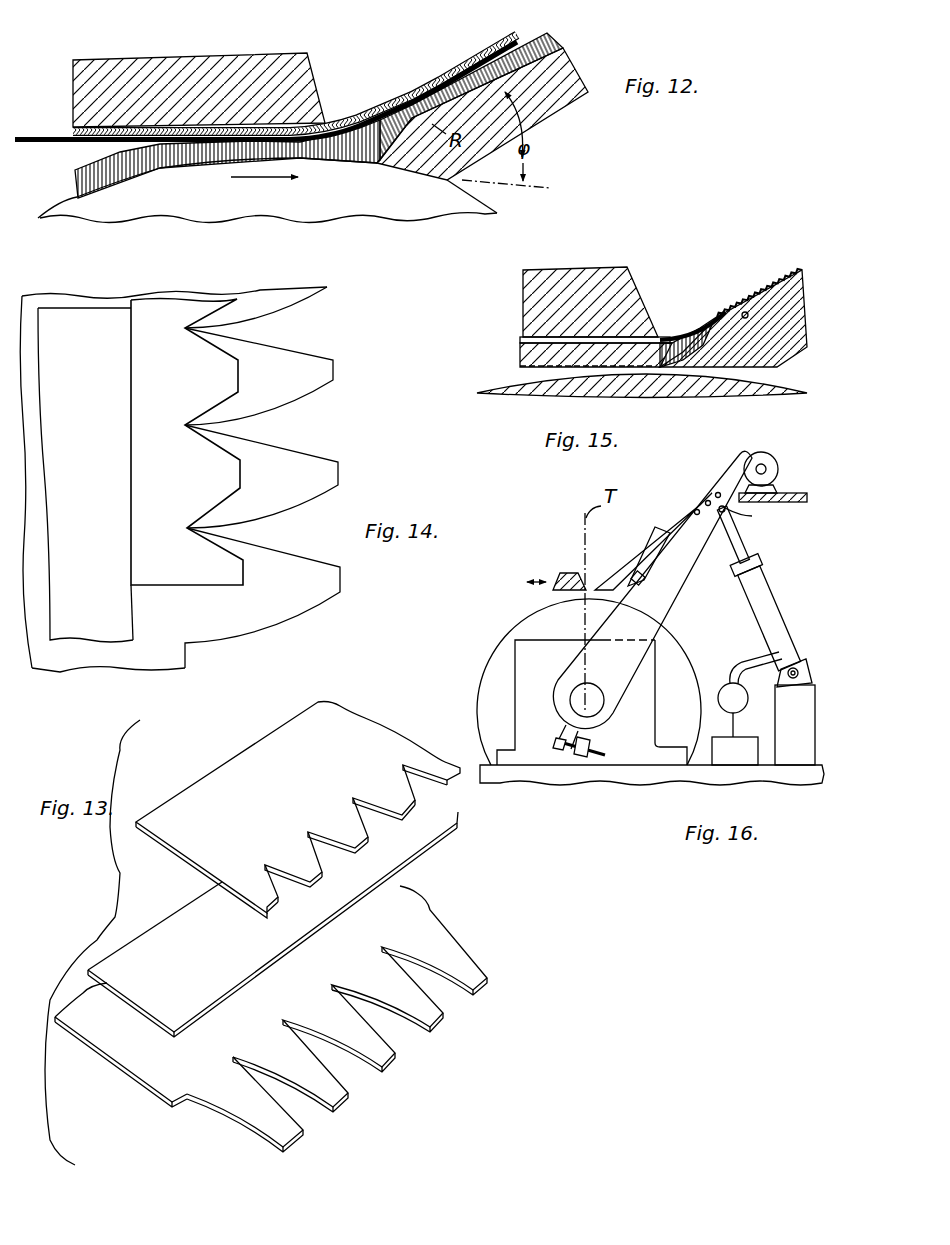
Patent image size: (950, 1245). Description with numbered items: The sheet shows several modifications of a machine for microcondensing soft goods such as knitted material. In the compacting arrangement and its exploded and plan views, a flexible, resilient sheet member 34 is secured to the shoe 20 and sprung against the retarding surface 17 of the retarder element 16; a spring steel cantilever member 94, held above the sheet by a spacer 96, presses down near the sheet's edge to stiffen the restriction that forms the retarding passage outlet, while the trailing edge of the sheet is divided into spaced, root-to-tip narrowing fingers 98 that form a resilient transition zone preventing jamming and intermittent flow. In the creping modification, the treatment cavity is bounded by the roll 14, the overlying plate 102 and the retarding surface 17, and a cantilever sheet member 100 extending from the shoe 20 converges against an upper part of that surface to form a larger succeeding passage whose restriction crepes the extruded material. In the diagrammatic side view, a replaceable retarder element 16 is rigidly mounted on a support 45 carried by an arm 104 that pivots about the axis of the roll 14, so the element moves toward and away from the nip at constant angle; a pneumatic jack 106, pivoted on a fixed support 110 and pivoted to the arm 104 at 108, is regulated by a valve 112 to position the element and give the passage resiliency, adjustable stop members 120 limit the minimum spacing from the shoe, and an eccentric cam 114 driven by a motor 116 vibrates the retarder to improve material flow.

In FIG. 12, the roll 14 is at (413, 205).
In FIG. 15, the roll 14 is at (528, 400).
In FIG. 16, the roll 14 is at (497, 635).
In FIG. 12, the retarder element 16 is at (566, 94).
In FIG. 15, the retarder element 16 is at (787, 283).
In FIG. 16, the retarder element 16 is at (608, 577).
In FIG. 12, the retarding surface 17 is at (500, 80).
In FIG. 15, the retarding surface 17 is at (746, 311).
In FIG. 12, the shoe 20 is at (222, 67).
In FIG. 15, the shoe 20 is at (587, 273).
In FIG. 16, the shoe 20 is at (568, 557).
In FIG. 14, the shoe 20 is at (100, 627).
In FIG. 12, the sheet member 34 is at (375, 113).
In FIG. 13, the sheet member 34 is at (130, 1070).
In FIG. 16, the support 45 is at (647, 540).
In FIG. 12, the cantilever member 94 is at (333, 123).
In FIG. 14, the cantilever member 94 is at (180, 570).
In FIG. 13, the cantilever member 94 is at (310, 730).
In FIG. 13, the spacer 96 is at (163, 923).
In FIG. 12, the fingers 98 is at (533, 22).
In FIG. 14, the fingers 98 is at (287, 570).
In FIG. 13, the fingers 98 is at (380, 1057).
In FIG. 15, the sheet member 100 is at (673, 333).
In FIG. 15, the plate 102 is at (655, 372).
In FIG. 16, the arm 104 is at (679, 572).
In FIG. 16, the pneumatic jack 106 is at (775, 615).
In FIG. 16, the pivot 108 is at (766, 516).
In FIG. 16, the fixed support 110 is at (797, 657).
In FIG. 16, the valve 112 is at (725, 683).
In FIG. 16, the cam 114 is at (753, 462).
In FIG. 16, the motor 116 is at (780, 473).
In FIG. 16, the stop members 120 is at (587, 730).